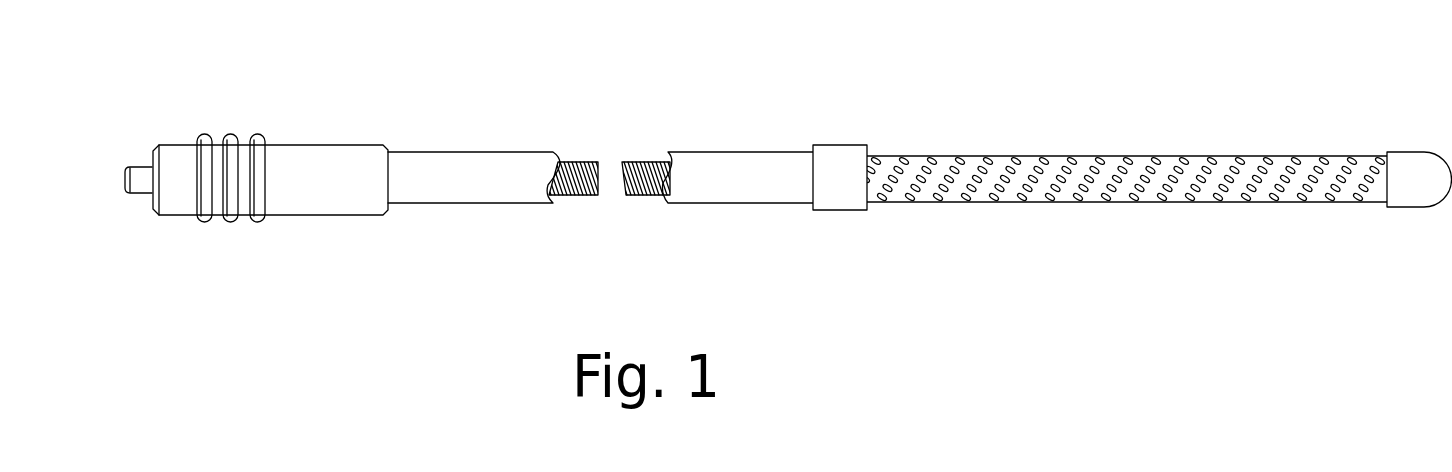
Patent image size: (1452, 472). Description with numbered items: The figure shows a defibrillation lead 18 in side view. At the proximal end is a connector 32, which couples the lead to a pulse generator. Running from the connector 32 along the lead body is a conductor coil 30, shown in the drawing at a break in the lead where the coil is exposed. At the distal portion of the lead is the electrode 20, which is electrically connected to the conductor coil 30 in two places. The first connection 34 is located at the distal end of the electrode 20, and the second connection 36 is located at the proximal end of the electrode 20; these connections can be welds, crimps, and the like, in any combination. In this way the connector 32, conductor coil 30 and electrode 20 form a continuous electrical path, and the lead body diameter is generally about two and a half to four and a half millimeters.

The lead 18 is at (788, 166).
The electrode 20 is at (1173, 143).
The conductor coil 30 is at (637, 160).
The connector 32 is at (139, 167).
The first connection 34 is at (1407, 145).
The second connection 36 is at (842, 137).